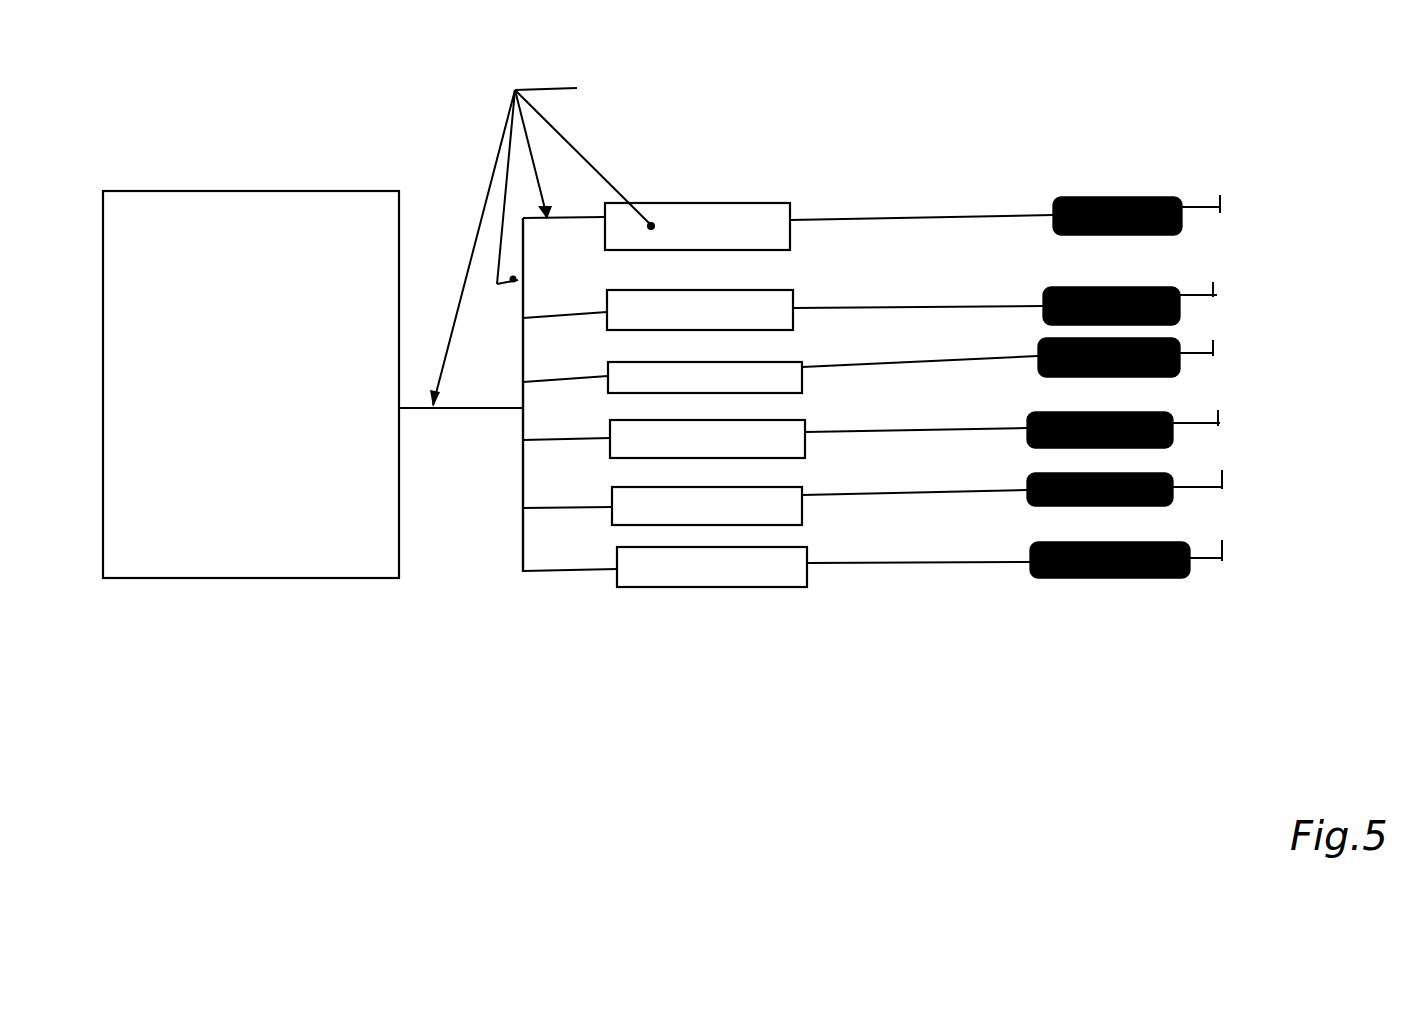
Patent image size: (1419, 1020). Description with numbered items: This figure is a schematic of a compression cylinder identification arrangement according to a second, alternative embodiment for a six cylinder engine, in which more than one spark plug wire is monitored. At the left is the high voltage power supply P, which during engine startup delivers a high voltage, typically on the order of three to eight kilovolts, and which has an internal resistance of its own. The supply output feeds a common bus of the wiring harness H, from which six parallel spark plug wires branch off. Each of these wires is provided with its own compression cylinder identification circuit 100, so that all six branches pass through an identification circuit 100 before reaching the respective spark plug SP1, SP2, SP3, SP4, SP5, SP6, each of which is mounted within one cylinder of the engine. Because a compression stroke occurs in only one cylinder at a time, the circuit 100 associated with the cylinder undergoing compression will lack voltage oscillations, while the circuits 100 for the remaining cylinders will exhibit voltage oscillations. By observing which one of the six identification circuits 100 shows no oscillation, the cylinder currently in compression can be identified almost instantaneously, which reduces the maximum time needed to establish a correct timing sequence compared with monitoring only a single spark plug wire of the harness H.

The high voltage power supply P is at (218, 600).
The wiring harness H is at (542, 226).
The compression cylinder identification circuit 100 is at (790, 205).
The spark plug SP1 is at (1205, 195).
The spark plug SP2 is at (1210, 278).
The spark plug SP3 is at (1212, 348).
The spark plug SP4 is at (1213, 410).
The spark plug SP5 is at (1213, 470).
The spark plug SP6 is at (1215, 533).